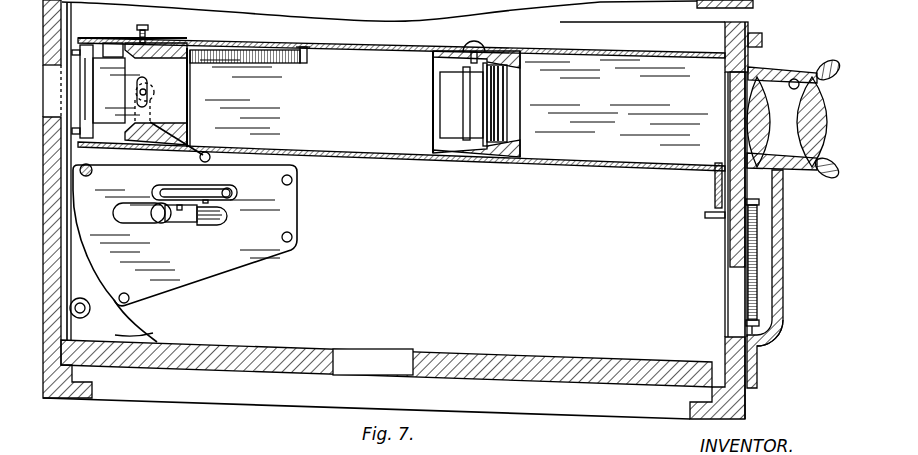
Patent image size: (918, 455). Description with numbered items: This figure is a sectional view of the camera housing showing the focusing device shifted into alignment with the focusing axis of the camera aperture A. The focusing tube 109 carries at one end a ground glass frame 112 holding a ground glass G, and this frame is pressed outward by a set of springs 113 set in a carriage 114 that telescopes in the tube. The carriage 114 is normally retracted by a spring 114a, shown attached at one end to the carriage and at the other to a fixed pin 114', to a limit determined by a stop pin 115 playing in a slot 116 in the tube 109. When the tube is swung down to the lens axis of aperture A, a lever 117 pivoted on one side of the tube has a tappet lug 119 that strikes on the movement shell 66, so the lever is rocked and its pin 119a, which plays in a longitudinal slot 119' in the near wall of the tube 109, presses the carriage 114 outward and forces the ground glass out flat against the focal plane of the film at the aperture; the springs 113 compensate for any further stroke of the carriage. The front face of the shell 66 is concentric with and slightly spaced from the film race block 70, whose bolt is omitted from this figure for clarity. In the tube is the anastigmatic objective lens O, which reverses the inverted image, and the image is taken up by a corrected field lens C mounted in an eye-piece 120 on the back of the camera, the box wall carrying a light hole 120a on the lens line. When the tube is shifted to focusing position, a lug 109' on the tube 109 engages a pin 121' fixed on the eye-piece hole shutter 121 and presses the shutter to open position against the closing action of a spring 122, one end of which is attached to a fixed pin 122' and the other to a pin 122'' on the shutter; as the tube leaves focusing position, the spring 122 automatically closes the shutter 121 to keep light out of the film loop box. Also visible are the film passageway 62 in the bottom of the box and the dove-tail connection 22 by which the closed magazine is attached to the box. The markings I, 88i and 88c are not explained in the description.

The aperture A is at (52, 91).
The ground glass G is at (109, 90).
The objective lens O is at (440, 82).
The field lens C is at (763, 77).
The lens I is at (793, 80).
The dove-tail connection 22 is at (95, 378).
The film passageway 62 is at (371, 358).
The movement shell 66 is at (297, 206).
The film race block 70 is at (150, 332).
The slot 88i is at (207, 184).
The slide member 88c is at (170, 226).
The tube 109 is at (401, 118).
The lug 109' is at (689, 185).
The ground glass frame 112 is at (94, 44).
The springs 113 is at (117, 44).
The carriage 114 is at (180, 95).
The fixed pin 114' is at (338, 61).
The spring 114a is at (299, 65).
The stop pin 115 is at (144, 40).
The slot 116 is at (157, 41).
The lever 117 is at (190, 143).
The tappet lug 119 is at (230, 157).
The longitudinal slot 119' is at (245, 66).
The pin 119a is at (165, 94).
The eye-piece 120 is at (804, 170).
The light hole 120a is at (712, 179).
The hole shutter 121 is at (701, 169).
The pin 121' is at (693, 224).
The spring 122 is at (785, 266).
The fixed pin 122' is at (788, 279).
The pin 122'' is at (785, 341).